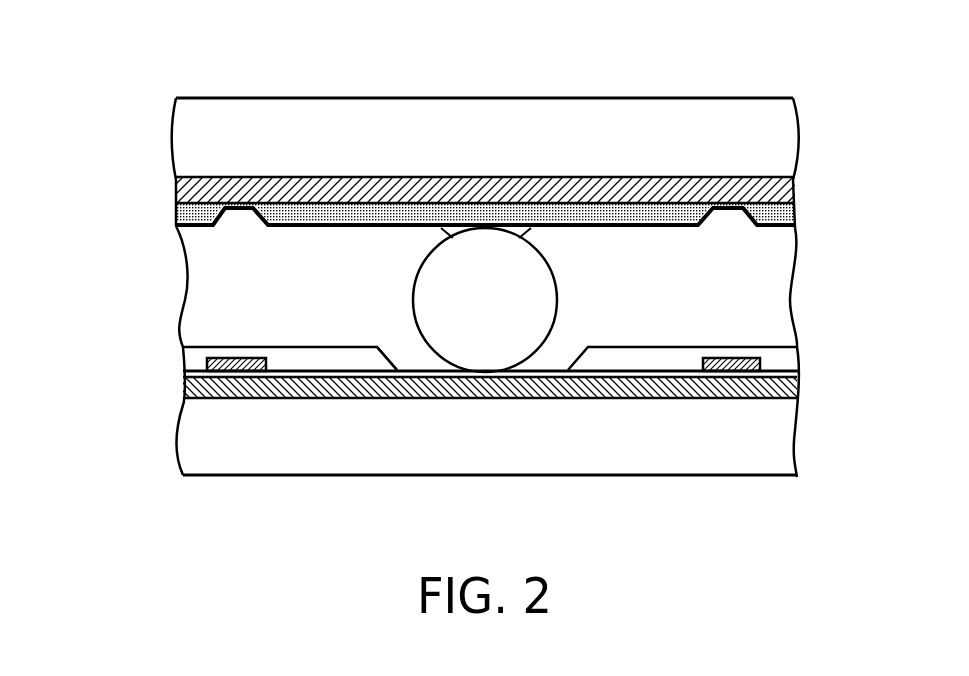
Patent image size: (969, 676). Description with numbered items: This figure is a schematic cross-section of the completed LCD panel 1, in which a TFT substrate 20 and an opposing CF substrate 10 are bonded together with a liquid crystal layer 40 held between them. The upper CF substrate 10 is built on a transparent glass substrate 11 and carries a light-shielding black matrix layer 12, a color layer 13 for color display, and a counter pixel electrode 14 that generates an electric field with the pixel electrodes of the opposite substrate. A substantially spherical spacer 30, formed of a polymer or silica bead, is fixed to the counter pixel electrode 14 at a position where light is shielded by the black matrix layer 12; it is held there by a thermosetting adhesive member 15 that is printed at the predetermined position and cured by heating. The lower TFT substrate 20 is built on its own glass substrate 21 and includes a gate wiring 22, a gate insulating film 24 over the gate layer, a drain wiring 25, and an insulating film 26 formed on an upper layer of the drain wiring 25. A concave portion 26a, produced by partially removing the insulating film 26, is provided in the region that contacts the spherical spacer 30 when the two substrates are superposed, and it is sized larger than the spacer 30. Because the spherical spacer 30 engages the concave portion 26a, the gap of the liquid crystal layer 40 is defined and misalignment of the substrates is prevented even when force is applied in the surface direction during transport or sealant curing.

The LCD panel 1 is at (766, 36).
The CF substrate 10 is at (814, 97).
The glass substrate 11 is at (320, 123).
The black matrix layer 12 is at (392, 180).
The color layer 13 is at (617, 208).
The counter pixel electrode 14 is at (677, 223).
The adhesive member 15 is at (453, 226).
The TFT substrate 20 is at (814, 345).
The glass substrate 21 is at (219, 463).
The gate wiring 22 is at (285, 388).
The gate insulating film 24 is at (655, 372).
The drain wiring 25 is at (740, 370).
The insulating film 26 is at (370, 372).
The concave portion 26a is at (412, 352).
The spherical spacer 30 is at (528, 265).
The liquid crystal layer 40 is at (202, 240).